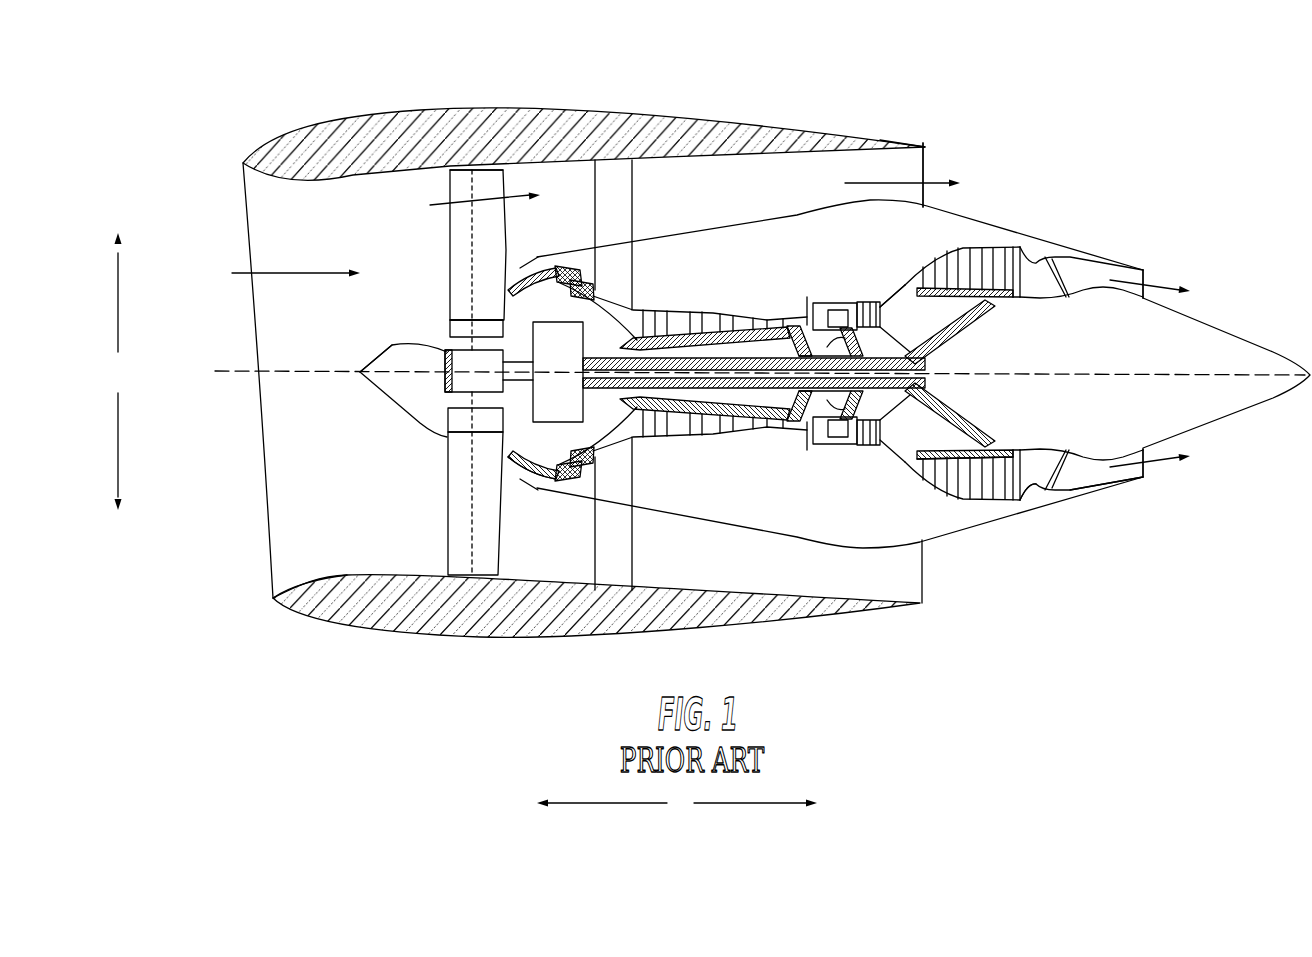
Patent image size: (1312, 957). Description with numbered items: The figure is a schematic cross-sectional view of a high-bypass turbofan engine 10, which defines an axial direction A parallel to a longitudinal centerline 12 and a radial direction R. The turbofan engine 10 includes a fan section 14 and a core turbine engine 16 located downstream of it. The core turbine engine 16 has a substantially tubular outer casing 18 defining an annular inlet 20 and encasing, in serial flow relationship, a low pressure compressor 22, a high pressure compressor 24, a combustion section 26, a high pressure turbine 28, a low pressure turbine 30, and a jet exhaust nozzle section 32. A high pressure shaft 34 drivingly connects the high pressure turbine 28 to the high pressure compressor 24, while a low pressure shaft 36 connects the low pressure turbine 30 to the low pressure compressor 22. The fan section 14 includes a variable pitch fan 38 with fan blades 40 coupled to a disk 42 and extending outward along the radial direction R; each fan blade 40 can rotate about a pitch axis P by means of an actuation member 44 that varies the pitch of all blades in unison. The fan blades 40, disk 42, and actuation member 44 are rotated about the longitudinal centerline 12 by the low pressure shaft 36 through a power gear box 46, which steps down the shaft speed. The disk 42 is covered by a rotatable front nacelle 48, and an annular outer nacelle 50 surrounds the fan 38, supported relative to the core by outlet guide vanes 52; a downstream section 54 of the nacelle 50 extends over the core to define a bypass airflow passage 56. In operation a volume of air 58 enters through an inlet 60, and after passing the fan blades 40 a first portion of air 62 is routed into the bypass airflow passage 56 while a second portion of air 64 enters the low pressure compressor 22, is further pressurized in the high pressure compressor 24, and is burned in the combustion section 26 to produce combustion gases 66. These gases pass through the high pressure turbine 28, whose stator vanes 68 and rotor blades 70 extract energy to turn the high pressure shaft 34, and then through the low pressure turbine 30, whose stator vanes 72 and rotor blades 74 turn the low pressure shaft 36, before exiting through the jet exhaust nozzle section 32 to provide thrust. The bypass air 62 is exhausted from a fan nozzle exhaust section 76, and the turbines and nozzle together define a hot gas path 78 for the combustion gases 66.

The turbofan engine 10 is at (1068, 118).
The longitudinal centerline 12 is at (1085, 372).
The fan section 14 is at (486, 70).
The core turbine engine 16 is at (805, 261).
The outer casing 18 is at (783, 533).
The annular inlet 20 is at (540, 480).
The low pressure compressor 22 is at (597, 446).
The high pressure compressor 24 is at (660, 430).
The combustion section 26 is at (818, 456).
The high pressure turbine 28 is at (948, 432).
The low pressure turbine 30 is at (1006, 495).
The jet exhaust nozzle section 32 is at (1063, 487).
The high pressure shaft 34 is at (867, 333).
The low pressure shaft 36 is at (957, 337).
The variable pitch fan 38 is at (406, 429).
The fan blades 40 is at (445, 517).
The disk 42 is at (449, 335).
The actuation member 44 is at (393, 343).
The power gear box 46 is at (598, 343).
The front nacelle 48 is at (450, 307).
The outer nacelle 50 is at (490, 638).
The outlet guide vanes 52 is at (637, 192).
The downstream section 54 is at (855, 128).
The bypass airflow passage 56 is at (728, 202).
The volume of air 58 is at (292, 272).
The inlet 60 is at (268, 590).
The first portion of air 62 is at (465, 197).
The second portion of air 64 is at (537, 258).
The combustion gases 66 is at (968, 250).
The HP turbine stator vanes 68 is at (838, 443).
The HP turbine rotor blades 70 is at (927, 405).
The LP turbine stator vanes 72 is at (927, 489).
The LP turbine rotor blades 74 is at (937, 495).
The fan nozzle exhaust section 76 is at (913, 167).
The hot gas path 78 is at (877, 295).
The pitch axis P is at (479, 185).
The radial direction R is at (119, 371).
The axial direction A is at (677, 803).